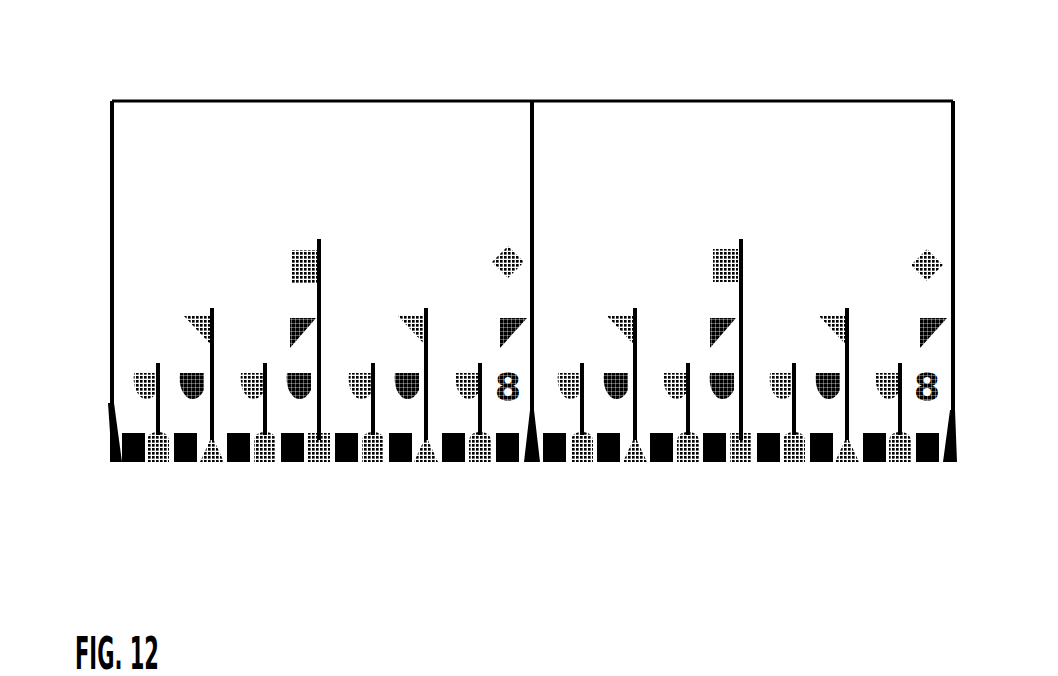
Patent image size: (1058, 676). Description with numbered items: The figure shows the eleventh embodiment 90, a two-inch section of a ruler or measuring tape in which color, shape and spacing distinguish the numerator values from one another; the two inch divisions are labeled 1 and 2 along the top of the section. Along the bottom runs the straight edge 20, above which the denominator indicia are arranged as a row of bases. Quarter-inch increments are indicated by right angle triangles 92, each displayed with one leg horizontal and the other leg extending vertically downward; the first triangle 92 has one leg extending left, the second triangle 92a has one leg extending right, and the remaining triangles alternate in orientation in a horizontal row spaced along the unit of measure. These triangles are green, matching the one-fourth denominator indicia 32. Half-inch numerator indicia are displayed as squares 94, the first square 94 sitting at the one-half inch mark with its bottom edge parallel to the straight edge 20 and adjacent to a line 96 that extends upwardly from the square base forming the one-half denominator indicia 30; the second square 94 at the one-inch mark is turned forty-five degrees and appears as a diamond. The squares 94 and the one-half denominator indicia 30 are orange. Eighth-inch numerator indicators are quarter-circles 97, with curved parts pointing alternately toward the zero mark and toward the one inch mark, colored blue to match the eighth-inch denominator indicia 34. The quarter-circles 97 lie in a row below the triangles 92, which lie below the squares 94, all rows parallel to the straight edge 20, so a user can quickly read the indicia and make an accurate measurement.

The eleventh embodiment 90 is at (940, 62).
The first field section 1 is at (296, 281).
The second field section 2 is at (740, 281).
The square 94 is at (300, 268).
The right angle triangle 92 is at (207, 318).
The second triangle 92a is at (284, 334).
The line 96 is at (323, 304).
The quarter-circle 97 is at (153, 387).
The eighth-inch denominator indicia 34 is at (162, 448).
The one-fourth denominator indicia 32 is at (212, 453).
The one-half denominator indicia 30 is at (320, 450).
The straight edge 20 is at (680, 472).